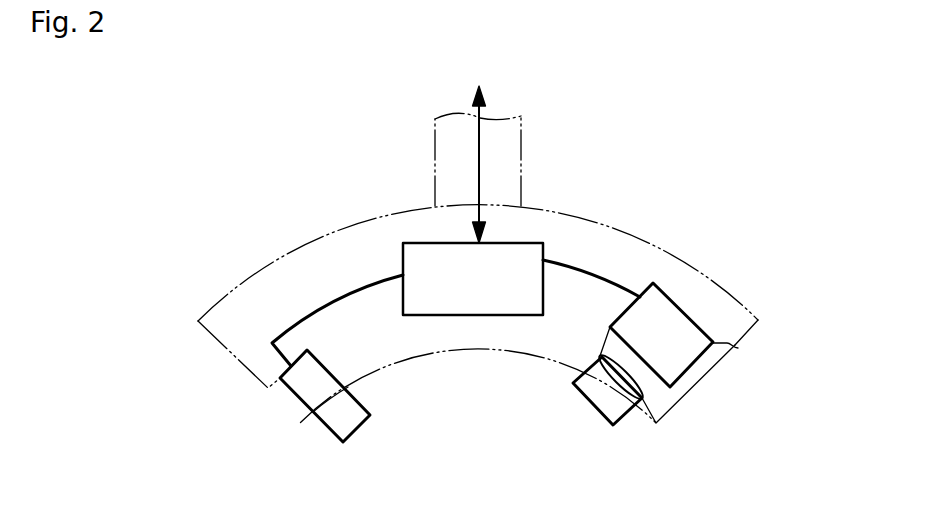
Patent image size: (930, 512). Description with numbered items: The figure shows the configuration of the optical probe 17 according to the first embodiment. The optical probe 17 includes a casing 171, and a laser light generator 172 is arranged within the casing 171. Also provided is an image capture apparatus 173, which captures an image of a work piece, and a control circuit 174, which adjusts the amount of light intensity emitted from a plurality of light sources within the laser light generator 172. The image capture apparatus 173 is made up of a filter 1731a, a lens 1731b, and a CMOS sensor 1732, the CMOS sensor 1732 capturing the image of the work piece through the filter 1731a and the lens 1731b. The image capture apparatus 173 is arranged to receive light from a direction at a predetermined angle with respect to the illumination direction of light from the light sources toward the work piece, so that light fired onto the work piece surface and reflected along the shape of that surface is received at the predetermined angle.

The optical probe 17 is at (478, 238).
The casing 171 is at (293, 252).
The laser light generator 172 is at (268, 388).
The image capture apparatus 173 is at (645, 332).
The filter 1731a is at (573, 383).
The lens 1731b is at (598, 356).
The CMOS sensor 1732 is at (738, 348).
The control circuit 174 is at (403, 243).